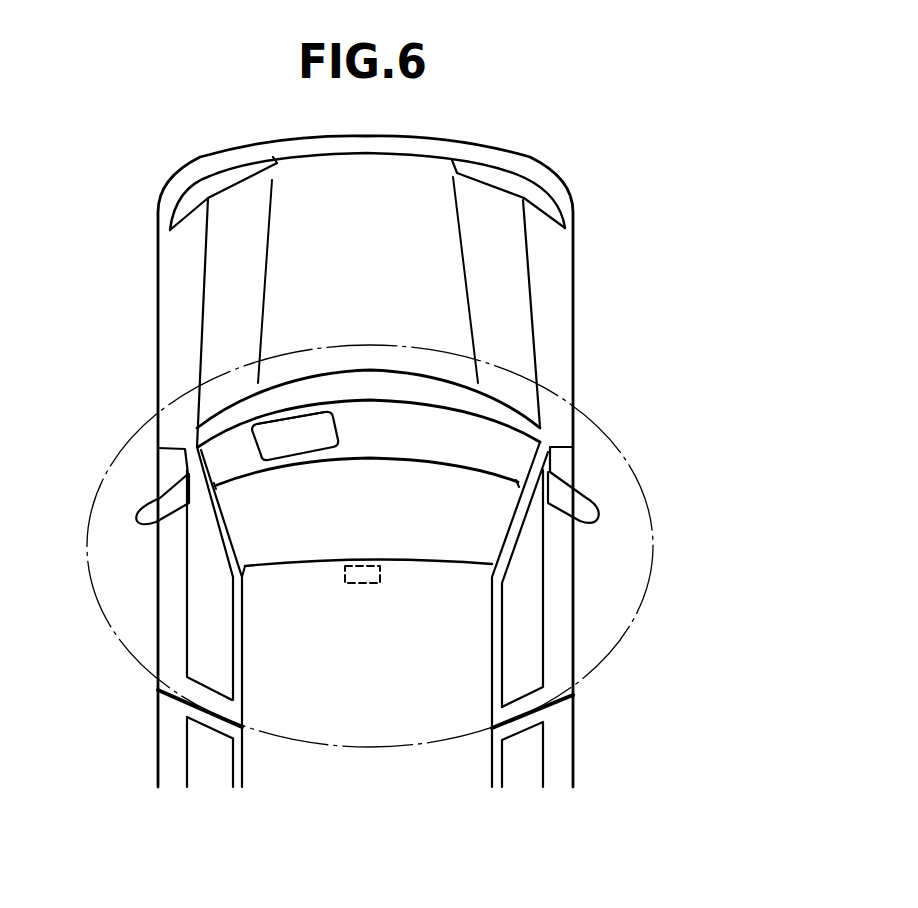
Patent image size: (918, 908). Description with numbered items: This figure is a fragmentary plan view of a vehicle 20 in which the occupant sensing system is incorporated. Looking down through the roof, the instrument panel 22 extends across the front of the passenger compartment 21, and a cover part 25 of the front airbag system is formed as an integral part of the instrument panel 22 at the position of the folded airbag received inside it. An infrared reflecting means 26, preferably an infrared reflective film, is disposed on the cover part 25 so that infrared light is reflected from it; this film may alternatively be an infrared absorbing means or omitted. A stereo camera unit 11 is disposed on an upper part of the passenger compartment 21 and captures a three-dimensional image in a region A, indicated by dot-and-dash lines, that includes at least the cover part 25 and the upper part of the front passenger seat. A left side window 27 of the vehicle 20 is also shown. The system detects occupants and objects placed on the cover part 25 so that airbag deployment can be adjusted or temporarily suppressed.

The stereo camera unit 11 is at (364, 587).
The vehicle 20 is at (577, 272).
The passenger compartment 21 is at (265, 637).
The instrument panel 22 is at (445, 455).
The cover part 25 is at (297, 419).
The infrared reflecting means 26 is at (272, 418).
The left side window 27 is at (205, 605).
The region A is at (624, 446).